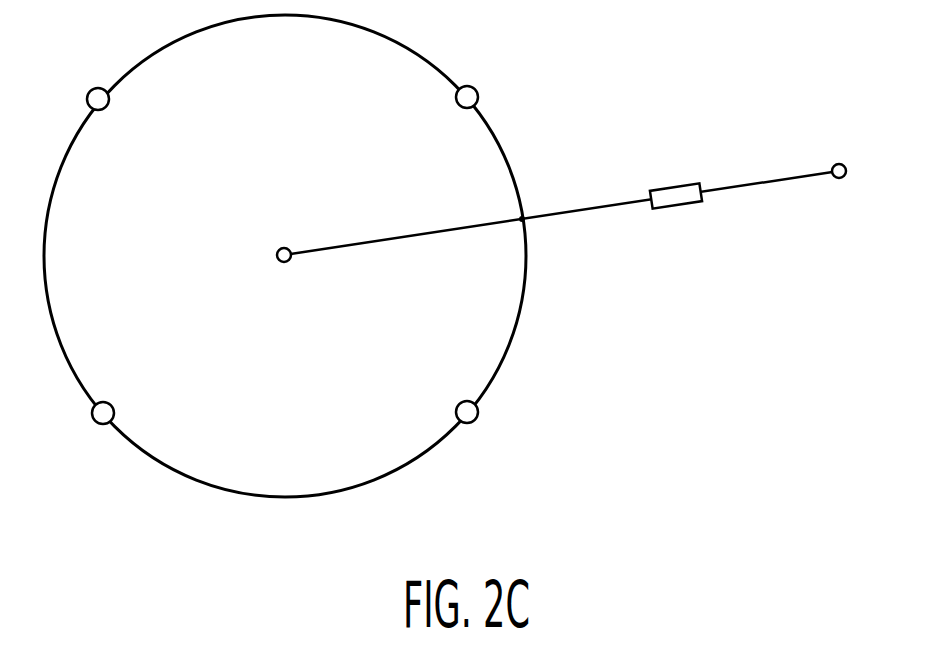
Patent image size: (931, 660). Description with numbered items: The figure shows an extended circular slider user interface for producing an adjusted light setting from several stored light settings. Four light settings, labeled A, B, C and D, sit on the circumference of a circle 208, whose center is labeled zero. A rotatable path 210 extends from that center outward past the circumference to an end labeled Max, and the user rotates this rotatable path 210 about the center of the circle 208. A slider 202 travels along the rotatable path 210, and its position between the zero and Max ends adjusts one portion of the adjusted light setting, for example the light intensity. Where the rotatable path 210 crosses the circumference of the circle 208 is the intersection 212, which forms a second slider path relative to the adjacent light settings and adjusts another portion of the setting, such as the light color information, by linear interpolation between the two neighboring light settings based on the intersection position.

The circle 208 is at (443, 484).
The rotatable path 210 is at (738, 187).
The slider 202 is at (670, 183).
The intersection 212 is at (525, 213).